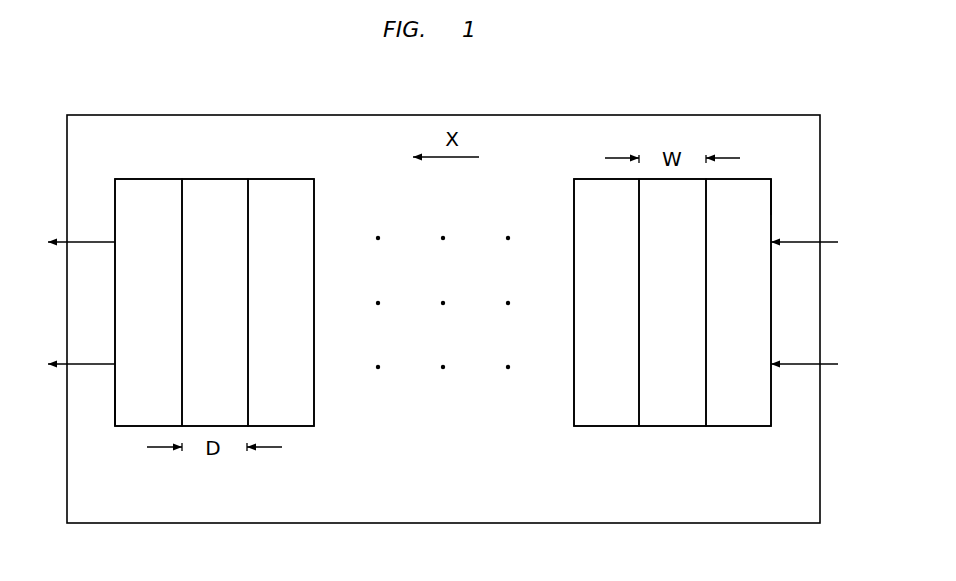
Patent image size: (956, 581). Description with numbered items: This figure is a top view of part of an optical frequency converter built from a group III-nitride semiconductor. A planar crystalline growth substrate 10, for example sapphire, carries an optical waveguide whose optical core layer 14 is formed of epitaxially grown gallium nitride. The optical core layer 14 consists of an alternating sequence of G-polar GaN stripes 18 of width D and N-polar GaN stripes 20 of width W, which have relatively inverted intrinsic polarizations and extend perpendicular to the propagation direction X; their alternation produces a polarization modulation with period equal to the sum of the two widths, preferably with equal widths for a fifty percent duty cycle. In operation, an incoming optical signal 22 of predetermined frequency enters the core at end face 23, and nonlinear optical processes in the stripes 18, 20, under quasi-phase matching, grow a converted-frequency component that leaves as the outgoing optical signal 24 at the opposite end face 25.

The crystalline growth substrate 10 is at (201, 157).
The optical core layer 14 is at (314, 426).
The G-polar GaN stripes 18 is at (202, 315).
The N-polar GaN stripes 20 is at (136, 315).
The incoming optical signal 22 is at (783, 315).
The end face 23 is at (771, 179).
The outgoing optical signal 24 is at (80, 315).
The end face 25 is at (115, 426).